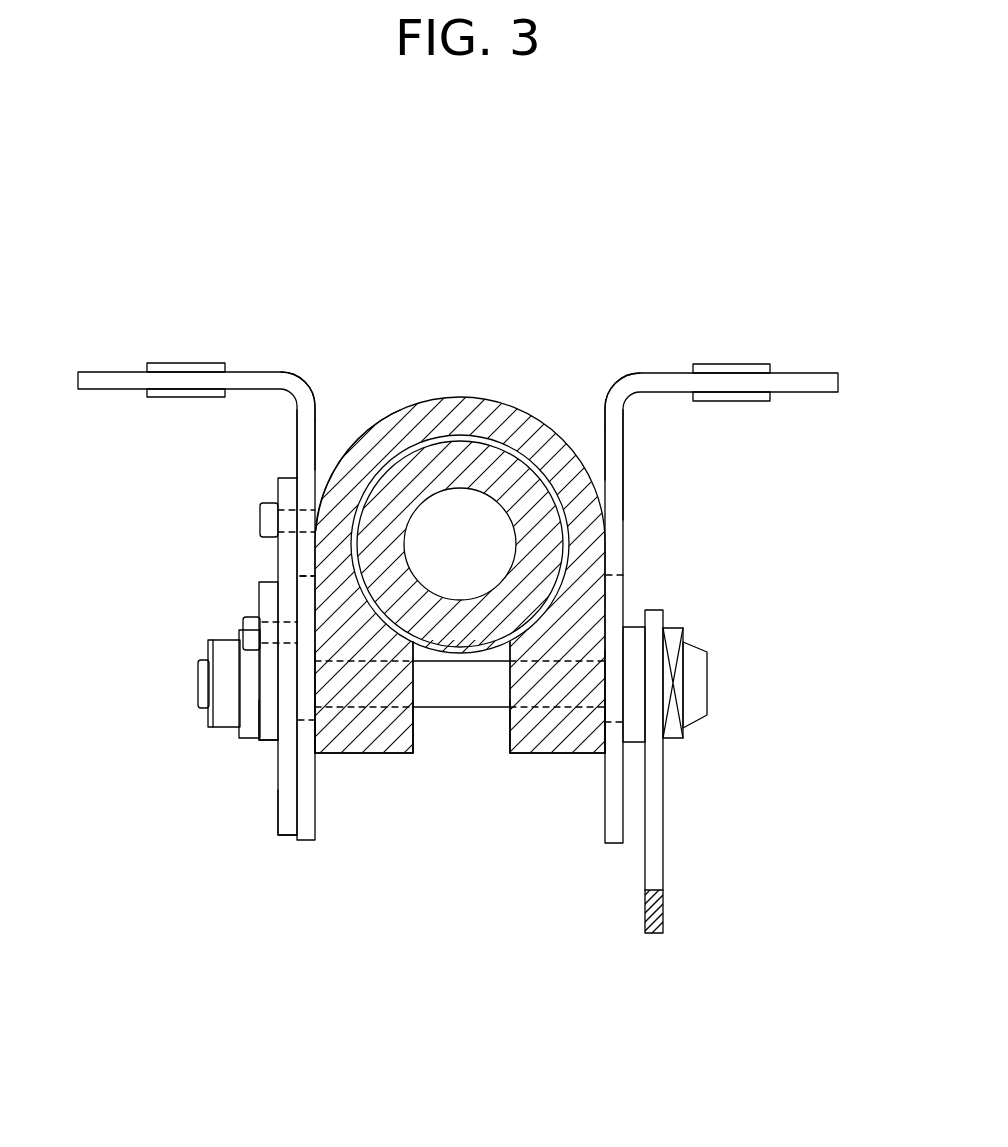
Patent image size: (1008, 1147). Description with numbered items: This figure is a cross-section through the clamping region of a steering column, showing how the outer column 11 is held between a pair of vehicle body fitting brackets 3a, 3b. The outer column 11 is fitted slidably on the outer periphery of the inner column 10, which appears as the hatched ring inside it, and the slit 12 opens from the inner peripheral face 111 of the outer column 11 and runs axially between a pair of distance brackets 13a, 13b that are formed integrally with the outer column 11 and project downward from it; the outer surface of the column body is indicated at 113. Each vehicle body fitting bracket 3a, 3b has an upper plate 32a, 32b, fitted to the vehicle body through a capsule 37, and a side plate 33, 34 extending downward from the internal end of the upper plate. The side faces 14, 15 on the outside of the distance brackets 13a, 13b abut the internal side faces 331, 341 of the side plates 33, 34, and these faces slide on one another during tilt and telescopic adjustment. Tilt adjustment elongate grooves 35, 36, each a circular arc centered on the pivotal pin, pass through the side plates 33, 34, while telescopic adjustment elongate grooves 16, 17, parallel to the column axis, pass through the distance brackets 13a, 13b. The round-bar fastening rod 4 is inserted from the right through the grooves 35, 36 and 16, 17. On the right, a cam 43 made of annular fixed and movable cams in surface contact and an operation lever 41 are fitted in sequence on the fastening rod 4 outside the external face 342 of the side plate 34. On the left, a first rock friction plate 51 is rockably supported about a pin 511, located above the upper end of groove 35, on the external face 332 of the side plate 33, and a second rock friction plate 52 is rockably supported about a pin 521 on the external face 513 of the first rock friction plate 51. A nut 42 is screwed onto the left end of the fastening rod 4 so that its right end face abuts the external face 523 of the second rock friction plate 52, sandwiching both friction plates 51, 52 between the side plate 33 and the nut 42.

The vehicle body fitting bracket 3a is at (424, 538).
The vehicle body fitting bracket 3b is at (725, 540).
The fastening rod 4 is at (480, 693).
The inner column 10 is at (470, 450).
The outer column 11 is at (525, 438).
The slit 12 is at (420, 740).
The distance bracket 13a is at (400, 733).
The distance bracket 13b is at (530, 737).
The side face 14 is at (312, 742).
The side face 15 is at (608, 740).
The telescopic adjustment elongate groove 16 is at (359, 697).
The telescopic adjustment elongate groove 17 is at (548, 697).
The upper plate 32a is at (253, 382).
The upper plate 32b is at (660, 382).
The side plate 33 is at (305, 411).
The internal side face 331 is at (312, 436).
The external face 332 is at (297, 463).
The side plate 34 is at (613, 429).
The internal side face 341 is at (605, 468).
The external face 342 is at (623, 503).
The tilt adjustment elongate groove 35 is at (300, 576).
The tilt adjustment elongate groove 36 is at (613, 573).
The capsule 37 is at (170, 368).
The operation lever 41 is at (655, 830).
The nut 42 is at (222, 652).
The cam 43 is at (633, 663).
The first rock friction plate 51 is at (280, 495).
The pin 511 is at (262, 520).
The external face 513 is at (278, 813).
The second rock friction plate 52 is at (259, 595).
The pin 521 is at (245, 628).
The external face 523 is at (240, 733).
The inner peripheral face 111 is at (432, 435).
The outer peripheral surface 113 is at (377, 425).